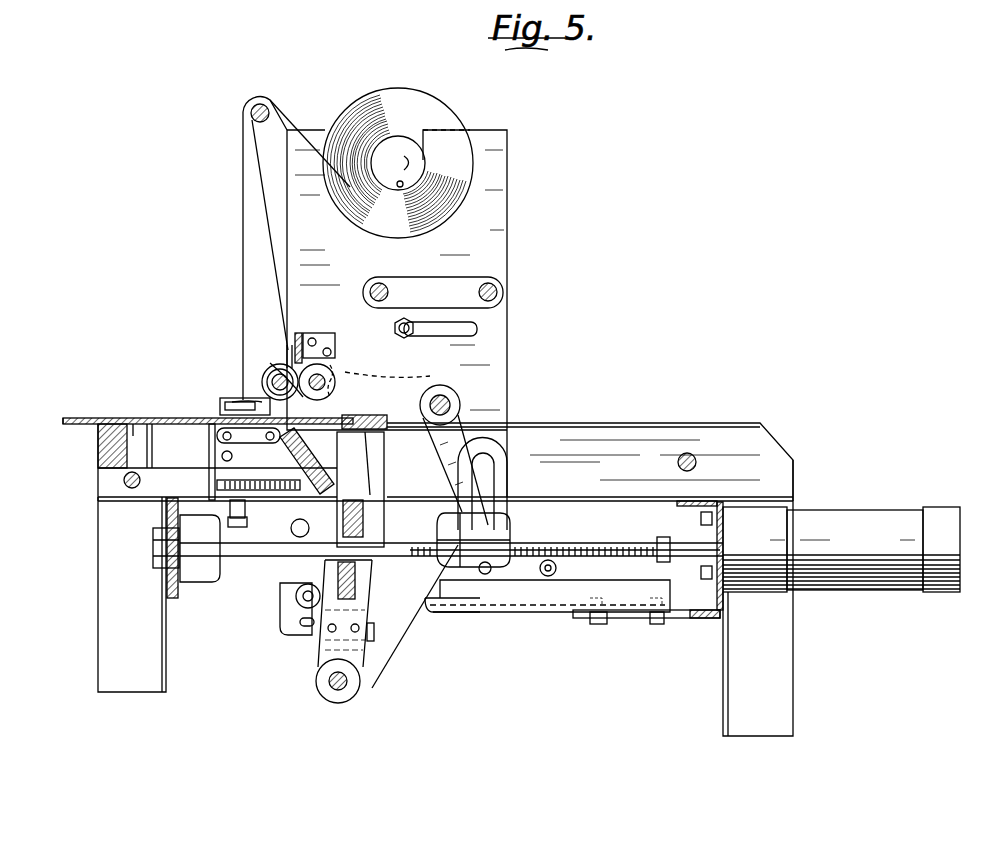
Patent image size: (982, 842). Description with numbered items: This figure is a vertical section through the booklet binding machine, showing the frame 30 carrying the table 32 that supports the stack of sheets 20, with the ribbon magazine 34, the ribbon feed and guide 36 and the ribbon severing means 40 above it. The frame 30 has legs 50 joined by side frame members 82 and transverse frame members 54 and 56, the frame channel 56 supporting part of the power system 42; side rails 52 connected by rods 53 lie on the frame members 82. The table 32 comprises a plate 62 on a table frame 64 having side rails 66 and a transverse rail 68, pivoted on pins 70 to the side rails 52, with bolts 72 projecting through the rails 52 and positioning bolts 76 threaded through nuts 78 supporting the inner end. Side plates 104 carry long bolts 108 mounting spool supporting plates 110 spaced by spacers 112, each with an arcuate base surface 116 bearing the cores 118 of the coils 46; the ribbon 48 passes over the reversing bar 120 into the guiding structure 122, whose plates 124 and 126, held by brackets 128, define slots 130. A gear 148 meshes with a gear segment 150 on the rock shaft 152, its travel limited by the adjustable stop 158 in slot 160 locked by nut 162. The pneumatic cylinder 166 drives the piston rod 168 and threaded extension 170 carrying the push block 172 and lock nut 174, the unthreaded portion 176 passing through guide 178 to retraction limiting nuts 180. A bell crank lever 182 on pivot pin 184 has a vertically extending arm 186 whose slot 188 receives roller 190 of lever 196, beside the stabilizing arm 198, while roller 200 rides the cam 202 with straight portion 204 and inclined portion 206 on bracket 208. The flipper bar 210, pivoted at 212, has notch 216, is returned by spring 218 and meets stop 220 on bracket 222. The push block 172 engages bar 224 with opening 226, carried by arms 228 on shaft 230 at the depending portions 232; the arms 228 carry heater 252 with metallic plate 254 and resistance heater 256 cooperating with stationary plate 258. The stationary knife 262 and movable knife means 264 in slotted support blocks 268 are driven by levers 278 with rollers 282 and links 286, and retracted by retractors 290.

The stack of sheets 20 is at (150, 417).
The frame 30 is at (98, 653).
The table 32 is at (82, 417).
The ribbon magazine 34 is at (507, 118).
The ribbon feed and guide 36 is at (306, 325).
The ribbon severing means 40 is at (255, 383).
The power system 42 is at (820, 510).
The coil of ribbon 46 is at (398, 92).
The ribbon 48 is at (258, 193).
The legs 50 is at (134, 688).
The side rails 52 is at (626, 428).
The rods 53 is at (690, 453).
The transverse frame member 54 is at (158, 588).
The frame channel 56 is at (695, 608).
The plate 62 is at (63, 423).
The table frame 64 is at (98, 474).
The side rails 66 is at (135, 434).
The transverse rail 68 is at (98, 462).
The pins 70 is at (99, 451).
The bolts 72 is at (209, 456).
The positioning bolts 76 is at (200, 548).
The nuts 78 is at (291, 528).
The side frame members 82 is at (272, 558).
The side plates 104 is at (243, 248).
The long bolts 108 is at (379, 283).
The ribbon spool supporting plates 110 is at (506, 176).
The spacers 112 is at (441, 280).
The arcuate base surface 116 is at (401, 188).
The cores 118 is at (414, 165).
The ribbon feed direction reversing bar 120 is at (250, 113).
The guiding structure 122 is at (314, 325).
The plate 124 is at (333, 350).
The plate 126 is at (286, 345).
The brackets 128 is at (322, 338).
The slots 130 is at (293, 352).
The gear 148 is at (334, 366).
The gear segment 150 is at (428, 374).
The rock shaft 152 is at (450, 394).
The adjustable stop 158 is at (404, 318).
The slot 160 is at (478, 327).
The nut 162 is at (408, 322).
The pneumatic cylinder 166 is at (872, 558).
The piston rod 168 is at (672, 526).
The threaded extension 170 is at (590, 535).
The push block 172 is at (430, 580).
The lock nut 174 is at (500, 572).
The unthreaded portion 176 is at (296, 598).
The guide 178 is at (198, 572).
The retraction limiting nuts 180 is at (155, 532).
The bell crank lever 182 is at (510, 455).
The pivot pin 184 is at (486, 580).
The vertically extending arm 186 is at (500, 482).
The slot 188 is at (475, 436).
The roller 190 is at (497, 524).
The lever 196 is at (508, 464).
The stabilizing arm 198 is at (468, 433).
The roller 200 is at (562, 546).
The cam 202 is at (569, 605).
The straight portion 204 is at (597, 585).
The inclined portion 206 is at (462, 578).
The bracket 208 is at (623, 619).
The flipper bar 210 is at (386, 472).
The pivot 212 is at (386, 456).
The notch 216 is at (244, 457).
The spring 218 is at (232, 510).
The stop 220 is at (285, 492).
The bracket 222 is at (141, 480).
The bar 224 is at (440, 566).
The opening 226 is at (382, 514).
The arms 228 is at (368, 690).
The shaft 230 is at (337, 700).
The depending portions 232 is at (318, 672).
The heater 252 is at (385, 412).
The metallic plate 254 is at (358, 411).
The resistance heater 256 is at (386, 441).
The stationary plate 258 is at (220, 403).
The stationary knife 262 is at (340, 388).
The movable knife means 264 is at (300, 395).
The slotted support blocks 268 is at (235, 402).
The levers 278 is at (343, 591).
The rollers 282 is at (292, 614).
The links 286 is at (217, 449).
The retractors 290 is at (297, 636).